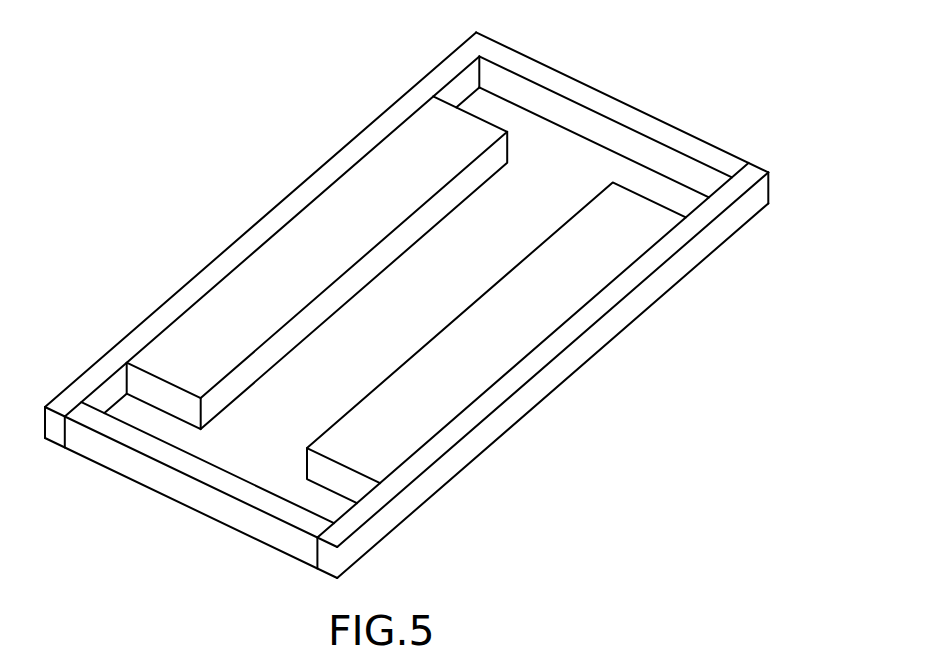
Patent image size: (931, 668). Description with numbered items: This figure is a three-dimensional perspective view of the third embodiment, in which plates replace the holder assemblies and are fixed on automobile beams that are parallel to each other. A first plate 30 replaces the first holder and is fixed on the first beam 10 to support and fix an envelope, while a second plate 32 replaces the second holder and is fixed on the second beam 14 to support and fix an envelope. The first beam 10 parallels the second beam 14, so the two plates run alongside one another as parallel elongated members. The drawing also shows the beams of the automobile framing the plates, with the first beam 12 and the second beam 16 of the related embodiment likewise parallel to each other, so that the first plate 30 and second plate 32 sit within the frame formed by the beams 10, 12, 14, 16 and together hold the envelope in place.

The first beam 10 is at (280, 211).
The first beam 12 is at (550, 78).
The second beam 14 is at (675, 268).
The second beam 16 is at (172, 483).
The first plate 30 is at (237, 317).
The second plate 32 is at (497, 356).